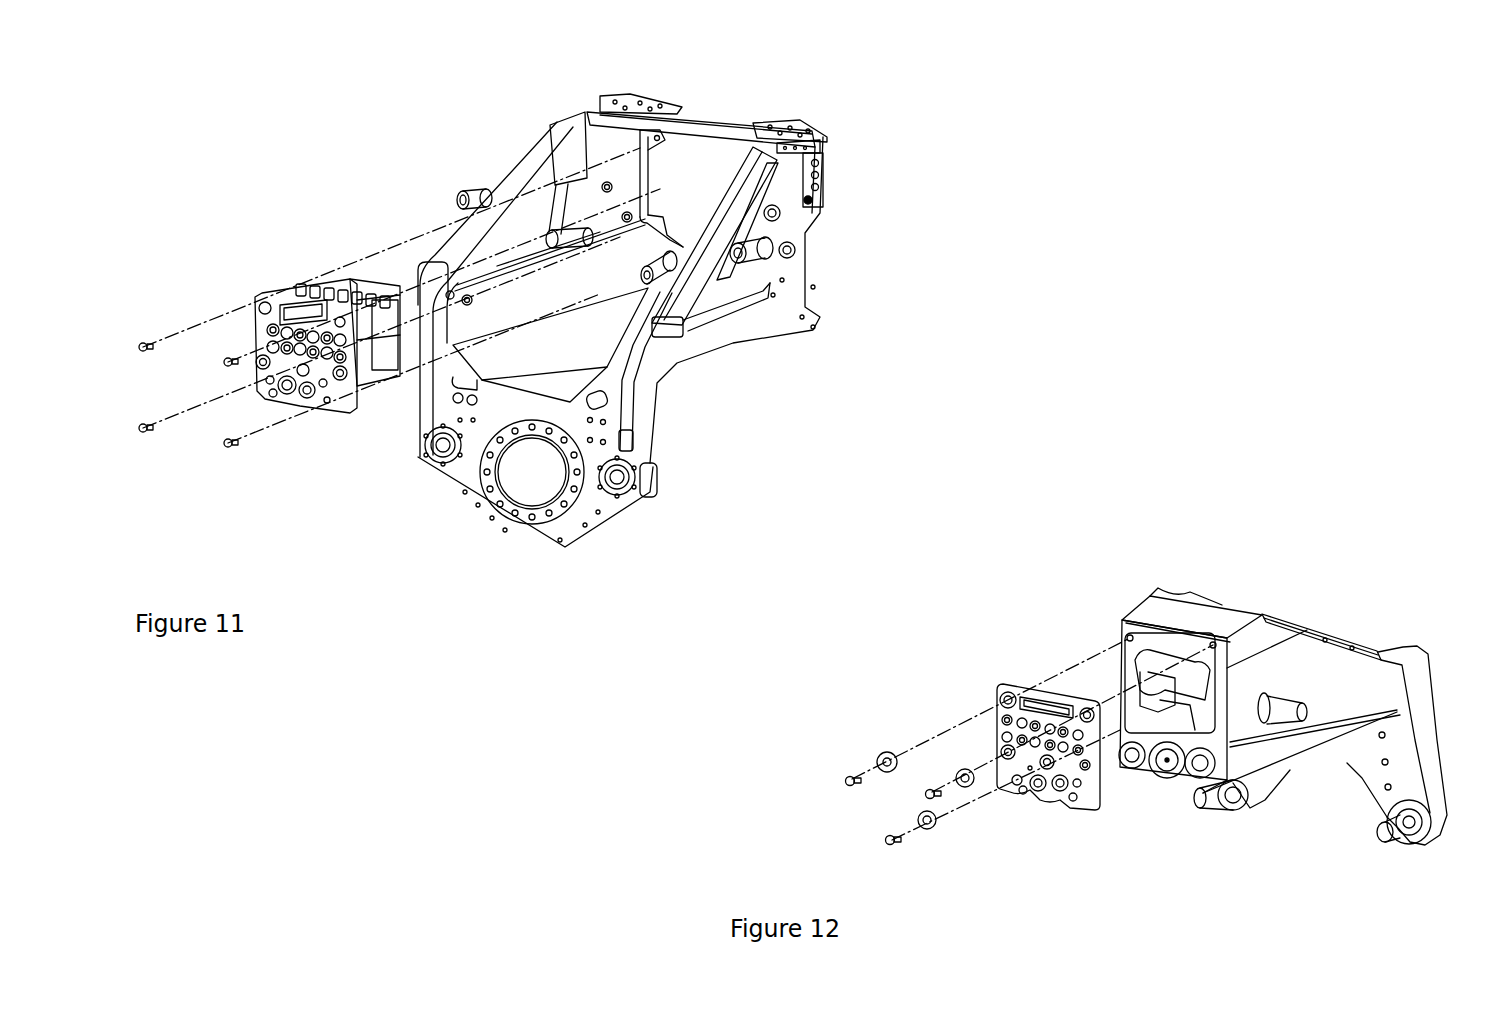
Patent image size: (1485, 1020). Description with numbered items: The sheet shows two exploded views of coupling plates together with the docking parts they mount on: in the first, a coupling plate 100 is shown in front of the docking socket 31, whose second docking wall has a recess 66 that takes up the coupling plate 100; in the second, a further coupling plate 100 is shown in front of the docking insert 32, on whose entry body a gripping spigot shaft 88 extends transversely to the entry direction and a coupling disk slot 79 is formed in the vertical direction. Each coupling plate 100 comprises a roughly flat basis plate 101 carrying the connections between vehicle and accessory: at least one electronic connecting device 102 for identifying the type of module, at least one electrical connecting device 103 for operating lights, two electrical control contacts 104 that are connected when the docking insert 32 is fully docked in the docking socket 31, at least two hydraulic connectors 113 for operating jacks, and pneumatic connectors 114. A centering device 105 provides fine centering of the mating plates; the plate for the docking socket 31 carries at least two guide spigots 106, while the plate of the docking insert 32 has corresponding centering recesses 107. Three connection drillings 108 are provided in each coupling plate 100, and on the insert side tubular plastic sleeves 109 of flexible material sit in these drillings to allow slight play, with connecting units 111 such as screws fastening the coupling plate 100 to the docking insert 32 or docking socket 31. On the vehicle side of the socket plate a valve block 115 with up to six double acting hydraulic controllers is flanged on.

In FIG. 11, the docking socket 31 is at (876, 181).
In FIG. 12, the docking insert 32 is at (1310, 557).
In FIG. 11, the recess 66 is at (698, 148).
In FIG. 12, the coupling disk slot 79 is at (1212, 645).
In FIG. 12, the gripping spigot shaft 88 is at (1200, 693).
In FIG. 11, the coupling plate 100 is at (273, 293).
In FIG. 12, the coupling plate 100 is at (1018, 680).
In FIG. 11, the basis plate 101 is at (307, 413).
In FIG. 12, the basis plate 101 is at (1080, 800).
In FIG. 11, the electronic connecting device 102 is at (261, 451).
In FIG. 12, the electronic connecting device 102 is at (997, 827).
In FIG. 11, the electrical connecting device 103 is at (261, 451).
In FIG. 12, the electrical connecting device 103 is at (997, 827).
In FIG. 11, the electrical control contact 104 is at (261, 451).
In FIG. 12, the electrical control contact 104 is at (997, 827).
In FIG. 11, the centering device 105 is at (342, 380).
In FIG. 12, the centering device 105 is at (1075, 761).
In FIG. 11, the guide spigot 106 is at (257, 357).
In FIG. 12, the centering recess 107 is at (1003, 745).
In FIG. 12, the connection drilling 108 is at (1000, 680).
In FIG. 12, the plastic sleeve 109 is at (963, 773).
In FIG. 11, the connecting unit 111 is at (228, 443).
In FIG. 12, the connecting unit 111 is at (930, 793).
In FIG. 11, the hydraulic connector 113 is at (261, 451).
In FIG. 12, the hydraulic connector 113 is at (997, 827).
In FIG. 11, the pneumatic connector 114 is at (258, 382).
In FIG. 12, the pneumatic connector 114 is at (1023, 788).
In FIG. 11, the valve block 115 is at (350, 290).